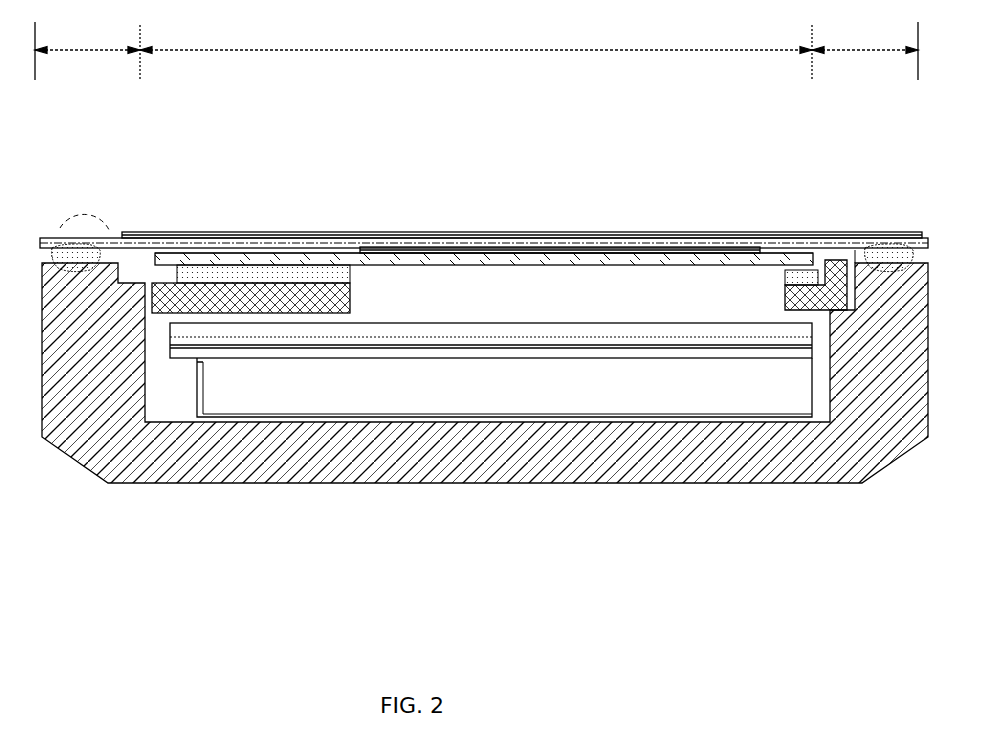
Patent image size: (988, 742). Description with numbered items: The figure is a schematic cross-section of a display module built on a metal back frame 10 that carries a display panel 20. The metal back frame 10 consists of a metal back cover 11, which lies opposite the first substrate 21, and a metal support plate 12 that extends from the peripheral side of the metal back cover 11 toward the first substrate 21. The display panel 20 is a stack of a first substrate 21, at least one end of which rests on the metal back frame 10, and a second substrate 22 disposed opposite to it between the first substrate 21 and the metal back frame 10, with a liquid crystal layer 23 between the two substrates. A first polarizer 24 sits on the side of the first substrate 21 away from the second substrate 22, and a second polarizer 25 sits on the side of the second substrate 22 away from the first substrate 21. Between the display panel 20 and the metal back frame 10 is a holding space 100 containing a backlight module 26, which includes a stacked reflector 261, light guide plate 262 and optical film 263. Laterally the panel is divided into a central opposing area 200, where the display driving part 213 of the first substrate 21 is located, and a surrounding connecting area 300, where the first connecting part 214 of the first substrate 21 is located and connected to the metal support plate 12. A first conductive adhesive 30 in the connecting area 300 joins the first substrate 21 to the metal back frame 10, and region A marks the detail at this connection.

The connecting area 300 is at (476, 45).
The opposing area 200 is at (476, 45).
The metal back frame 10 is at (43, 560).
The metal back cover 11 is at (228, 450).
The metal support plate 12 is at (87, 425).
The holding space 100 is at (731, 288).
The display panel 20 is at (302, 142).
The first substrate 21 is at (318, 243).
The second substrate 22 is at (417, 247).
The liquid crystal layer 23 is at (497, 250).
The first polarizer 24 is at (575, 232).
The second polarizer 25 is at (633, 265).
The backlight module 26 is at (423, 560).
The reflector 261 is at (467, 420).
The light guide plate 262 is at (532, 397).
The optical film 263 is at (598, 345).
The display driving part 213 is at (212, 232).
The first connecting part 214 is at (47, 236).
The first conductive adhesive 30 is at (893, 250).
The detail region A is at (88, 220).